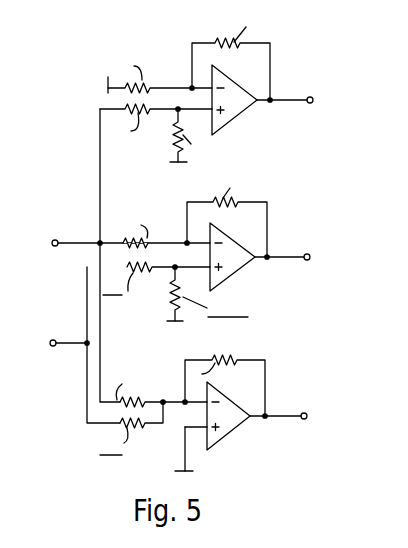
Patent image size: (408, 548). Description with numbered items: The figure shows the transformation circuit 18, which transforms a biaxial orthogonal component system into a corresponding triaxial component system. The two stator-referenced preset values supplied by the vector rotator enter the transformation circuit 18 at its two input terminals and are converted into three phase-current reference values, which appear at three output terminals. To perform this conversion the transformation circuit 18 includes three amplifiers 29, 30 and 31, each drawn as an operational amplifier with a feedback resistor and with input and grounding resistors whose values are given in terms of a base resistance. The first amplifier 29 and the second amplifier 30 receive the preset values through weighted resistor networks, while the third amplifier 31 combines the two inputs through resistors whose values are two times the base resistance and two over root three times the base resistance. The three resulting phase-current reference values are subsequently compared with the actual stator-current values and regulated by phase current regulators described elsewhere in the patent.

The transformation circuit 18 is at (132, 191).
The amplifier 29 is at (228, 84).
The amplifier 30 is at (224, 239).
The amplifier 31 is at (222, 399).